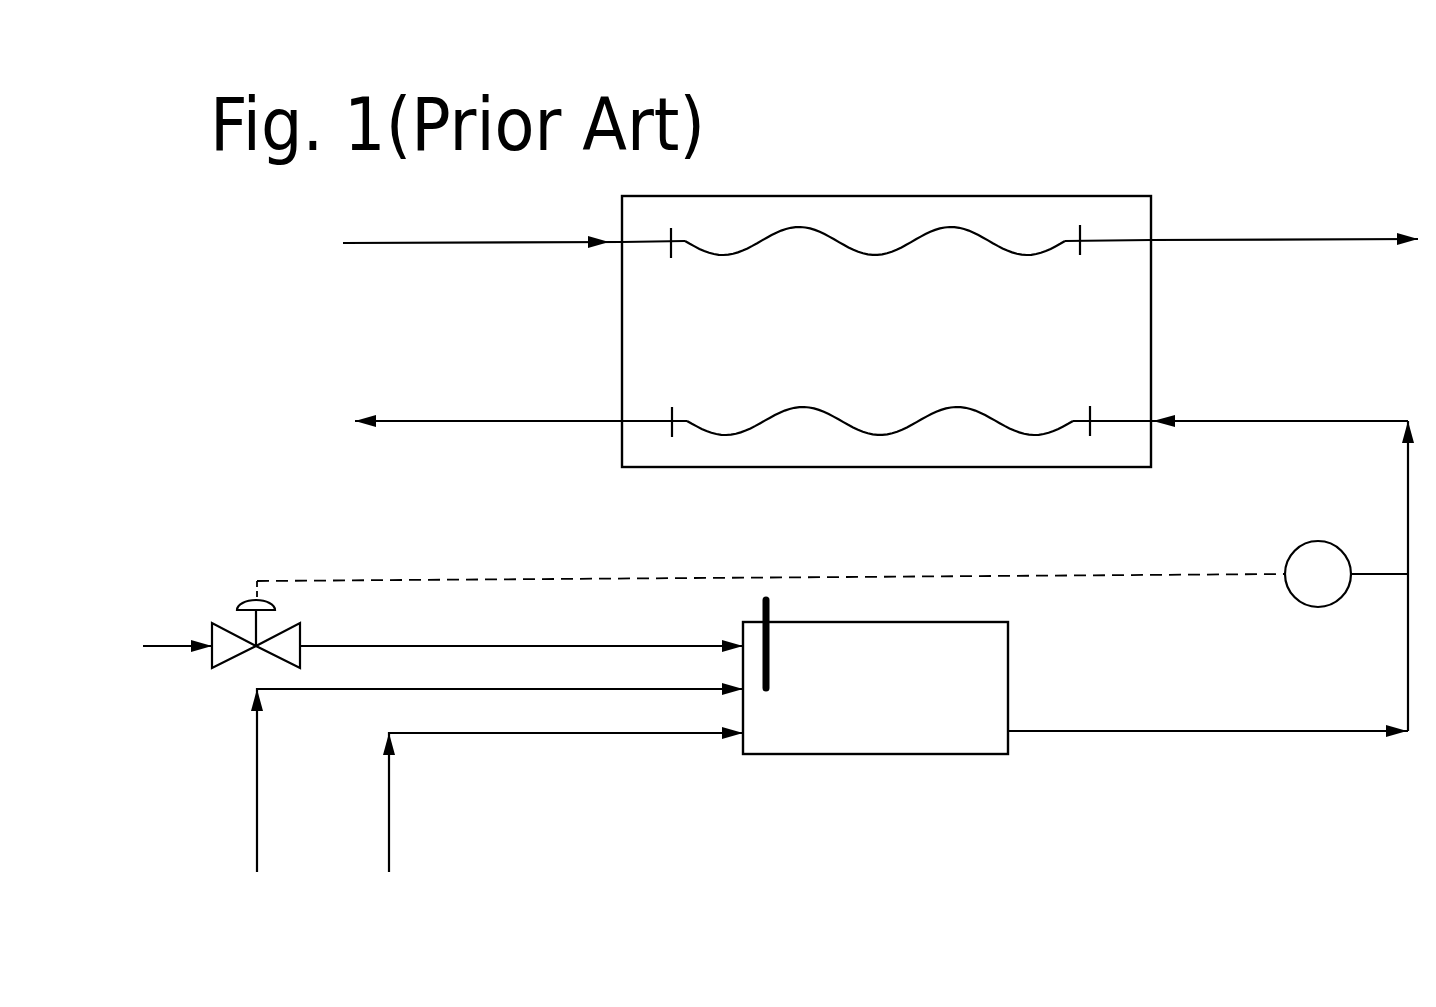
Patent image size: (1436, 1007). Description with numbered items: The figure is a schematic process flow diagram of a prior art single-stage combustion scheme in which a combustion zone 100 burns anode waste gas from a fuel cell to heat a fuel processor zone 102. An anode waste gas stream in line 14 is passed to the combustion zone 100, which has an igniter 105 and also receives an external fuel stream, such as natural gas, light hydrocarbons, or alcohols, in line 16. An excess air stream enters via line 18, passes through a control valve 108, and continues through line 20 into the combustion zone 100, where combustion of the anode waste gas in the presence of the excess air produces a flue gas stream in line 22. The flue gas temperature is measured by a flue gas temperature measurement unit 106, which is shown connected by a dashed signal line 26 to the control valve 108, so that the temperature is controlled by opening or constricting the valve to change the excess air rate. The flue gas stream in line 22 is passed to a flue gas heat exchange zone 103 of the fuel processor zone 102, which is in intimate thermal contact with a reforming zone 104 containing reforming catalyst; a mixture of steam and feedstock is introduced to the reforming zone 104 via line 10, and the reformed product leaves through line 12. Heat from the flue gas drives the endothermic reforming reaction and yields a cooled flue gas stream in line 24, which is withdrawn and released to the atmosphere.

The line 10 is at (465, 243).
The process fluid outlet stream 12 is at (1322, 239).
The line 14 is at (389, 812).
The line 16 is at (257, 812).
The line 18 is at (178, 646).
The line 20 is at (565, 646).
The line 22 is at (1323, 419).
The line 24 is at (550, 421).
The control signal line 26 is at (836, 577).
The combustion zone 100 is at (838, 760).
The fuel processor zone 102 is at (977, 193).
The flue gas heat exchange zone 103 is at (930, 407).
The reforming zone 104 is at (912, 240).
The igniter 105 is at (762, 600).
The flue gas temperature measurement unit 106 is at (1317, 540).
The control valve 108 is at (300, 623).